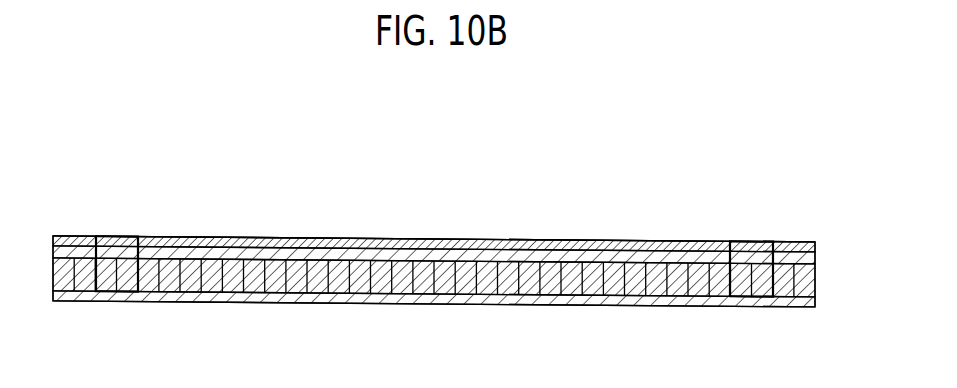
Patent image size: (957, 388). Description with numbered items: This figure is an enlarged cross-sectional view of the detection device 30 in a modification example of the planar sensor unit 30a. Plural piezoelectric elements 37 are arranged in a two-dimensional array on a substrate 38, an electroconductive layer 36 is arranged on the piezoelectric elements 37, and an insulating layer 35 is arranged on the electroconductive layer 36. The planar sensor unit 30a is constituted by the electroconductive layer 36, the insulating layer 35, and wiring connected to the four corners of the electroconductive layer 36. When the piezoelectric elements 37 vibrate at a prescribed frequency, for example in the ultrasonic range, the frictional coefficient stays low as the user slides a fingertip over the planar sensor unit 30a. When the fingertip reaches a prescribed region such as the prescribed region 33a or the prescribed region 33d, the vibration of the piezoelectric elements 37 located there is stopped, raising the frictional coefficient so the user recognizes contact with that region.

The detection device 30 is at (674, 153).
The planar sensor unit 30a is at (547, 234).
The prescribed region 33a is at (118, 235).
The prescribed region 33d is at (750, 242).
The insulating layer 35 is at (818, 243).
The electroconductive layer 36 is at (817, 258).
The piezoelectric elements 37 is at (247, 292).
The substrate 38 is at (818, 308).